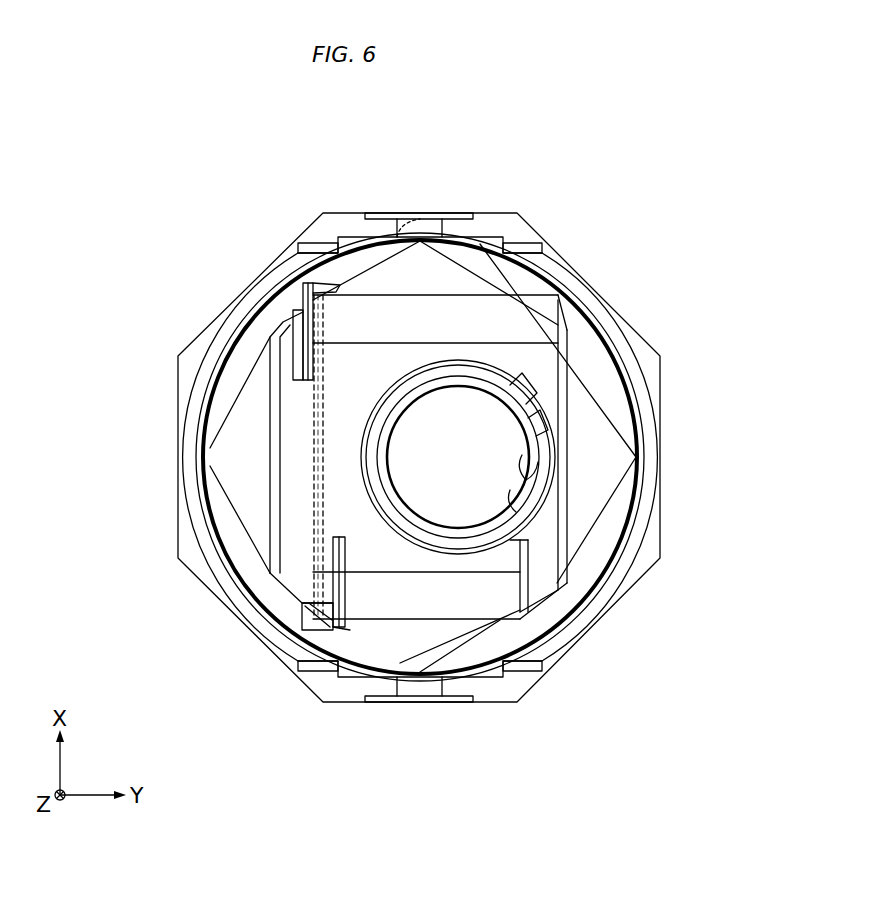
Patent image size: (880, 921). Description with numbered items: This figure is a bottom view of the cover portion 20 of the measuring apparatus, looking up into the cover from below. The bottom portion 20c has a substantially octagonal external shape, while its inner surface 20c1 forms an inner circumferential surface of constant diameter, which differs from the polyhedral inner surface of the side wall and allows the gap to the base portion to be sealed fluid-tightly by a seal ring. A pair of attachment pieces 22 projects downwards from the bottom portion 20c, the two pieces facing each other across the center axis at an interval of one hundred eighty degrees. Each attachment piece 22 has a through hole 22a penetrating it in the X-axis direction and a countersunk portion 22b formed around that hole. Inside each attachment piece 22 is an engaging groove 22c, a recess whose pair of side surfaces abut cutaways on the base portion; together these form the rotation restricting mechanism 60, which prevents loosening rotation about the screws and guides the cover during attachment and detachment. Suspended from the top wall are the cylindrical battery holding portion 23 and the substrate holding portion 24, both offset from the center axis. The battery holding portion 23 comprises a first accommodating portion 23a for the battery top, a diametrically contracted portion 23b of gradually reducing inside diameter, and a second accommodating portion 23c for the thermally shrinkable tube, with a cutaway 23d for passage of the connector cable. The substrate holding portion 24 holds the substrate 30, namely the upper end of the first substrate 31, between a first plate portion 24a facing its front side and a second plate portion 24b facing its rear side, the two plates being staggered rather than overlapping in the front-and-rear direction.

The cover portion 20 is at (264, 265).
The bottom portion 20c is at (170, 483).
The inner surface 20c1 is at (202, 422).
The attachment piece 22 is at (488, 212).
The through hole 22a is at (421, 218).
The countersunk portion 22b is at (385, 214).
The engaging groove 22c is at (336, 250).
The battery holding portion 23 is at (488, 336).
The first accommodating portion 23a is at (545, 440).
The diametrically contracted portion 23b is at (530, 478).
The second accommodating portion 23c is at (530, 500).
The cutaway 23d is at (538, 388).
The substrate holding portion 24 is at (266, 330).
The first plate portion 24a is at (282, 343).
The second plate portion 24b is at (350, 630).
The substrate 30 is at (310, 410).
The first substrate 31 is at (209, 457).
The rotation restricting mechanism 60 is at (492, 246).